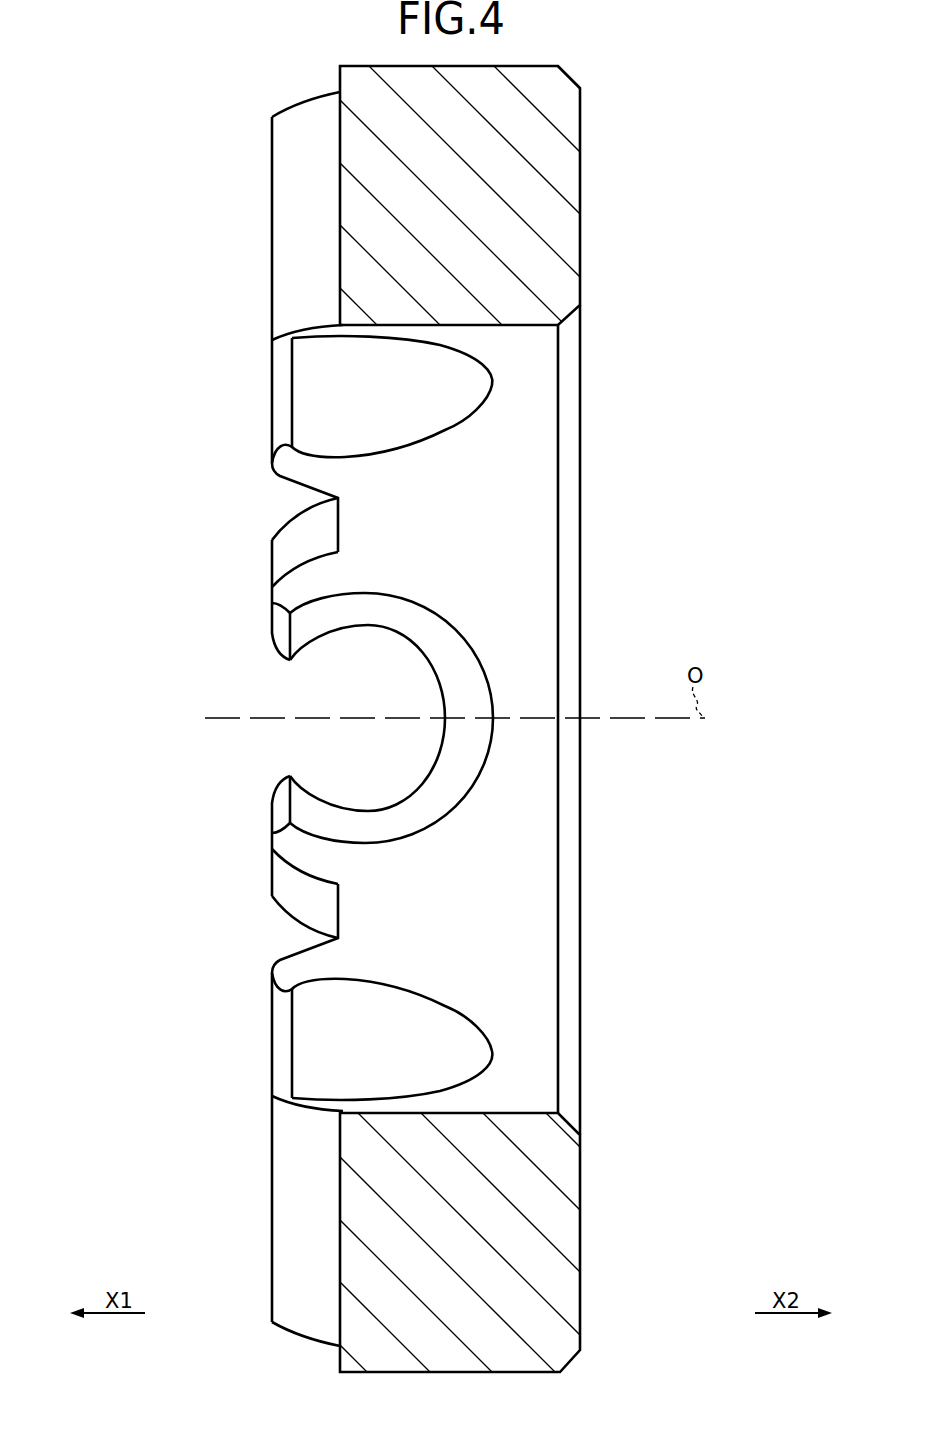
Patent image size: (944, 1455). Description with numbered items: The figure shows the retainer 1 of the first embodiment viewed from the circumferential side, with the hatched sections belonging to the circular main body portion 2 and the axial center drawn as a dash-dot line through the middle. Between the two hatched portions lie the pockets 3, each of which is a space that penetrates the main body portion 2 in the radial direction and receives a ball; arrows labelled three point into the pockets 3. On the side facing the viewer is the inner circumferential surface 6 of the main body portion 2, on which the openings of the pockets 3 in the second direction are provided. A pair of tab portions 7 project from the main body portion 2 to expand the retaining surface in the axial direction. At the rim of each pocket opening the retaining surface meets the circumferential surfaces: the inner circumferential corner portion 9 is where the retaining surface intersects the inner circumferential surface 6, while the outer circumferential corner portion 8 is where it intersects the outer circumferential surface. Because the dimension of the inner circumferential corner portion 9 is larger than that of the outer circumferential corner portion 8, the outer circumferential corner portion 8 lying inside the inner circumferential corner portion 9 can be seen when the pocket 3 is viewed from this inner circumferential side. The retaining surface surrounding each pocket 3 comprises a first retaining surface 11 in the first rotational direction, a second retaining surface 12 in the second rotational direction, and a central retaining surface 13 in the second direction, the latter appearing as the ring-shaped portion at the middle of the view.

The retainer 1 is at (460, 720).
The main body portion 2 is at (585, 355).
The pocket 3 is at (368, 375).
The inner circumferential surface 6 is at (532, 843).
The tab portion 7 is at (288, 563).
The outer circumferential corner portion 8 is at (353, 810).
The inner circumferential corner portion 9 is at (480, 413).
The first retaining surface 11 is at (345, 425).
The second retaining surface 12 is at (453, 633).
The central retaining surface 13 is at (463, 690).